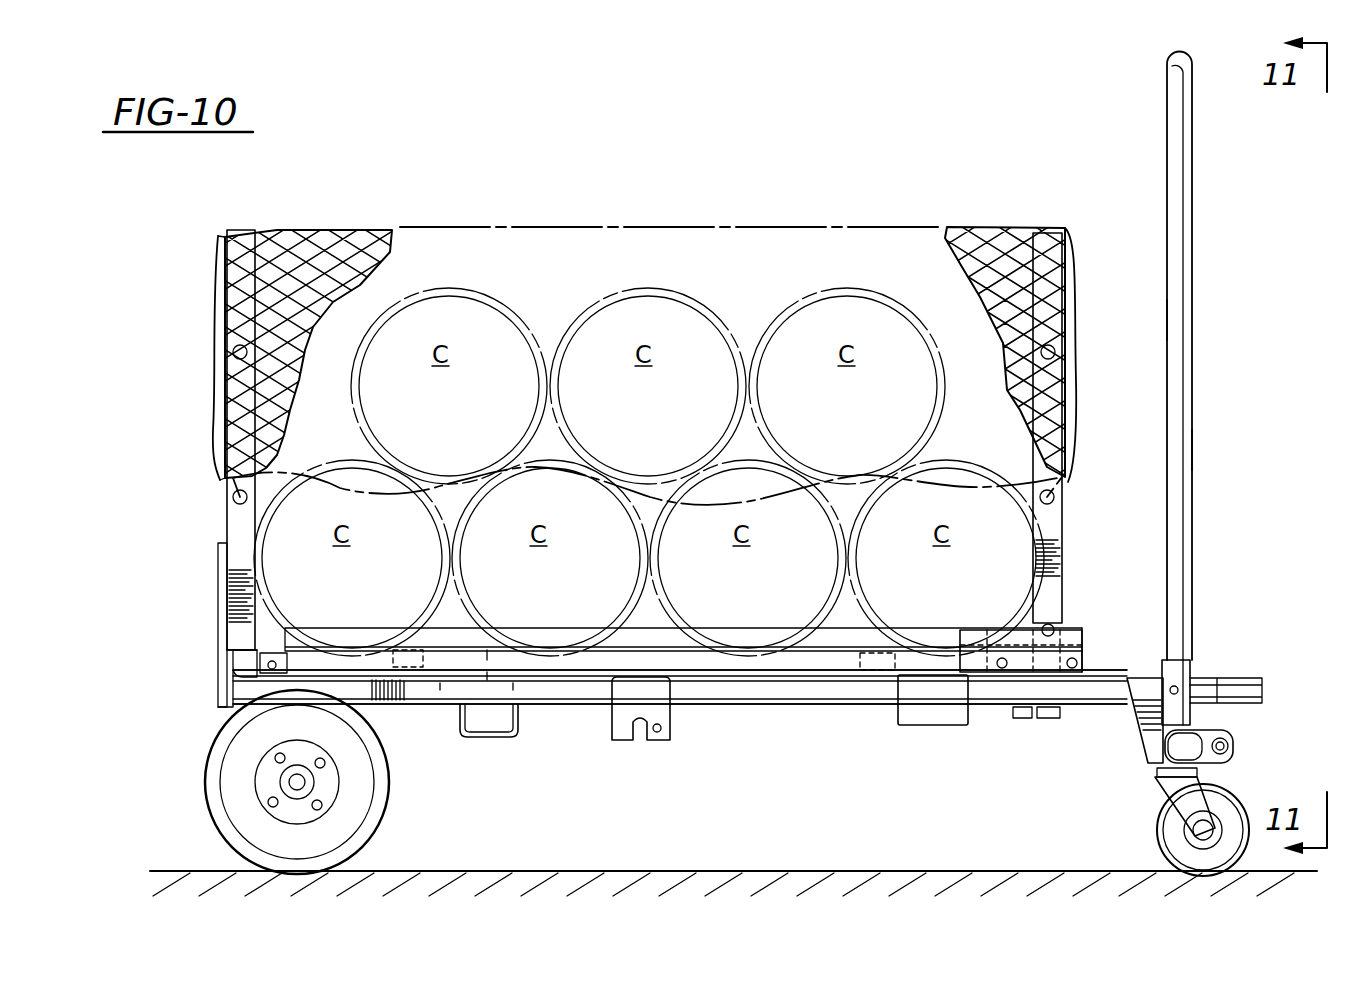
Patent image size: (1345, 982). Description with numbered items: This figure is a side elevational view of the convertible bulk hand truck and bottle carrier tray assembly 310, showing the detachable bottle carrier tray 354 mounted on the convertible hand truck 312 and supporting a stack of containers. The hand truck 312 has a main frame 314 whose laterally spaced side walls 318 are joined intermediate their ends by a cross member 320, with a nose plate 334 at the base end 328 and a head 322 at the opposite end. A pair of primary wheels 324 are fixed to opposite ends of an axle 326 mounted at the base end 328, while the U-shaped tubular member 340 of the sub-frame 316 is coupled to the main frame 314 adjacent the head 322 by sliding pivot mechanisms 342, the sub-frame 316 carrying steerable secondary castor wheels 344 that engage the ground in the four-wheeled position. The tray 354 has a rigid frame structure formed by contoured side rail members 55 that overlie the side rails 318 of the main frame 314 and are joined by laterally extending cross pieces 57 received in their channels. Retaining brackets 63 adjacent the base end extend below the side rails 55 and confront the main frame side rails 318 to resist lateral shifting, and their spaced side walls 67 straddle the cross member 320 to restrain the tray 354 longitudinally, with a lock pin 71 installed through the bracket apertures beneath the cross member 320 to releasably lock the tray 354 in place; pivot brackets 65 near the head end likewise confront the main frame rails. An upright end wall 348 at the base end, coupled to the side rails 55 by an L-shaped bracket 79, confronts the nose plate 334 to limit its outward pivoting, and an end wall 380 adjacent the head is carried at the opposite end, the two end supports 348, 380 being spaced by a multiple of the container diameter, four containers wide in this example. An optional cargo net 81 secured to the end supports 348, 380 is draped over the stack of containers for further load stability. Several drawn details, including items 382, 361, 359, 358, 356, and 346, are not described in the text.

The convertible bulk hand truck and bottle carrier tray assembly 310 is at (1055, 144).
The cargo net 81 is at (975, 227).
The bottle carrier tray 354 is at (1057, 224).
The U-shaped tubular member 340 is at (1184, 202).
The convertible hand truck 312 is at (1215, 317).
The sub-frame 316 is at (1198, 449).
The end wall 380 is at (1063, 508).
The rear upright 382 is at (1055, 530).
The hinge bracket 361 is at (1082, 623).
The head 322 is at (1202, 667).
The upright end wall 348 is at (233, 520).
The nose plate 334 is at (223, 555).
The clamp 359 is at (220, 653).
The base end 328 is at (208, 670).
The L-shaped bracket 79 is at (247, 668).
The primary wheels 324 is at (205, 783).
The axle 326 is at (285, 783).
The side walls 67 is at (440, 683).
The retaining brackets 63 is at (487, 650).
The cross pieces 57 is at (410, 680).
The deck 358 is at (823, 652).
The side rail members 55 is at (582, 668).
The side walls 318 is at (743, 693).
The block 356 is at (847, 678).
The pivot brackets 65 is at (1020, 710).
The cross member 320 is at (487, 672).
The lock pin 71 is at (507, 740).
The clip bracket 346 is at (625, 740).
The main frame 314 is at (780, 712).
The sliding pivot mechanisms 342 is at (1133, 728).
The secondary castor wheels 344 is at (1168, 840).